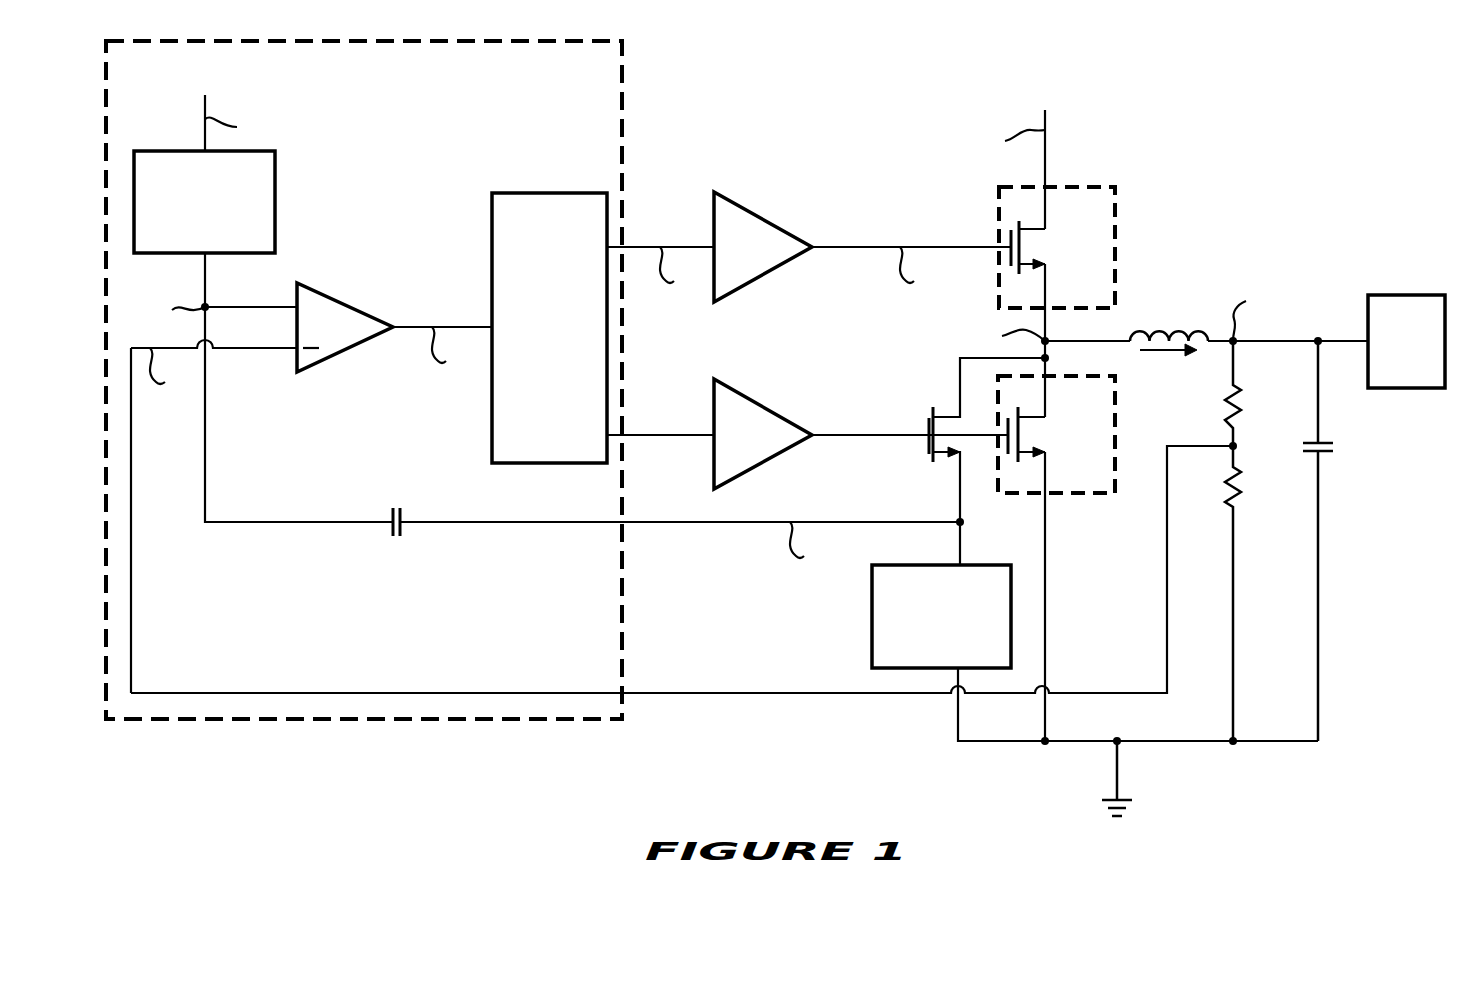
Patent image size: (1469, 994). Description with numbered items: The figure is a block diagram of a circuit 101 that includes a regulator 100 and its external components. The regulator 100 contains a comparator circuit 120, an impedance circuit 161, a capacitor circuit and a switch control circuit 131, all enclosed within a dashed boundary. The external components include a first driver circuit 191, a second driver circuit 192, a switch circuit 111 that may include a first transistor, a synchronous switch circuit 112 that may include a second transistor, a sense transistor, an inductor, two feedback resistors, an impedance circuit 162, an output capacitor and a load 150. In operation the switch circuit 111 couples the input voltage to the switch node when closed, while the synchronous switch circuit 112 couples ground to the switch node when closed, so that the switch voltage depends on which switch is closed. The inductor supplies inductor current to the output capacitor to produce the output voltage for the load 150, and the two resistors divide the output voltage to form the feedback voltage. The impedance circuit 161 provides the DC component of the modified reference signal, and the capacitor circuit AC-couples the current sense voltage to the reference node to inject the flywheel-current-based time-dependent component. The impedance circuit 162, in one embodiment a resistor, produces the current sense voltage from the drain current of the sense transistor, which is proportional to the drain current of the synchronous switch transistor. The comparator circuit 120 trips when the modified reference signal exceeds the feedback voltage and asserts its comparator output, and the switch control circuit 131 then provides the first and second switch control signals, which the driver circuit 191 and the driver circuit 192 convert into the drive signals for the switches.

The circuit 101 is at (1193, 80).
The regulator 100 is at (562, 88).
The impedance circuit 161 is at (247, 246).
The comparator circuit 120 is at (323, 341).
The switch control circuit 131 is at (548, 452).
The driver circuit 191 is at (728, 258).
The driver circuit 192 is at (728, 445).
The switch circuit 111 is at (1069, 220).
The synchronous switch circuit 112 is at (1069, 408).
The impedance circuit 162 is at (985, 658).
The load 150 is at (1404, 381).